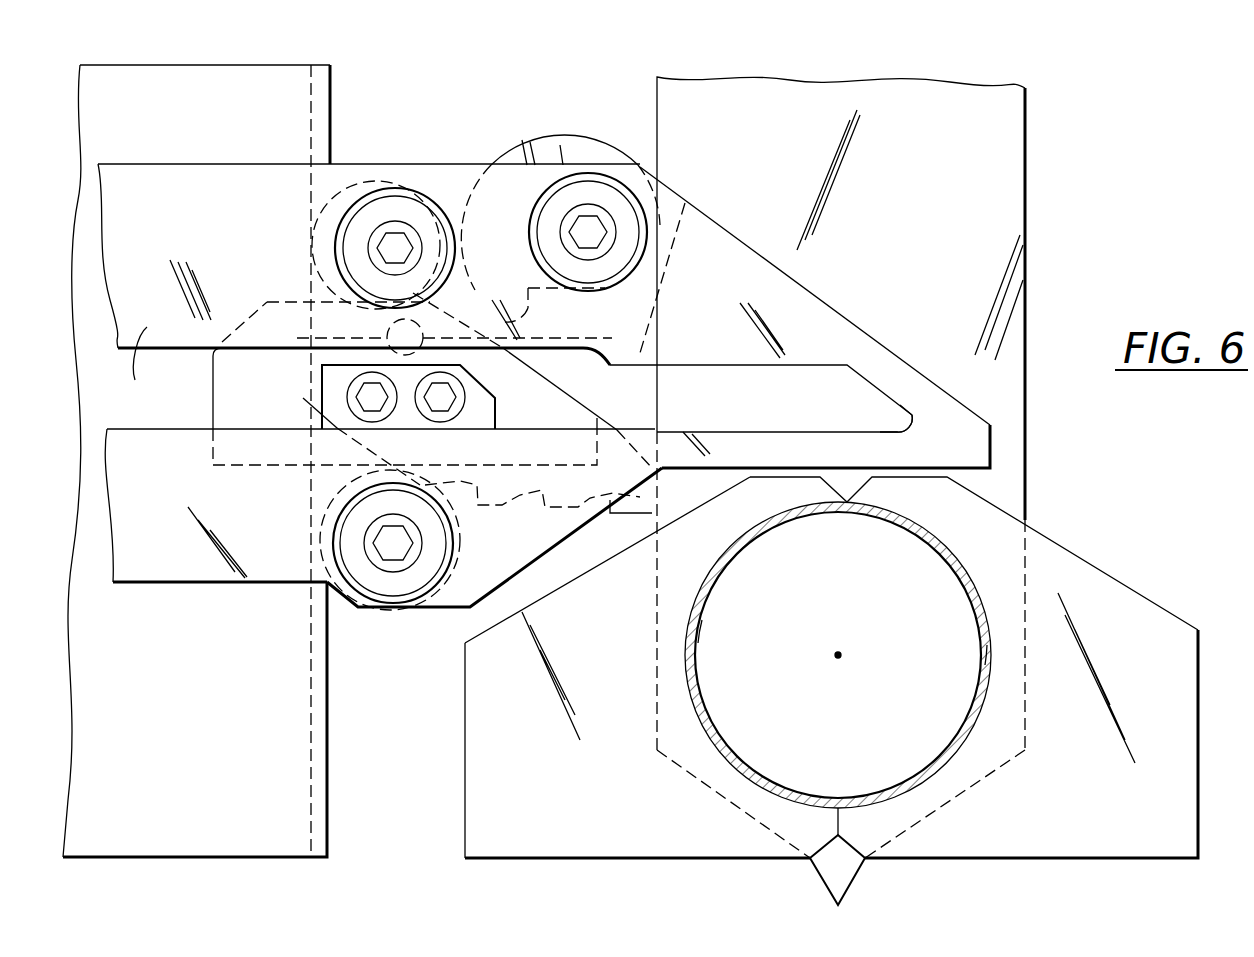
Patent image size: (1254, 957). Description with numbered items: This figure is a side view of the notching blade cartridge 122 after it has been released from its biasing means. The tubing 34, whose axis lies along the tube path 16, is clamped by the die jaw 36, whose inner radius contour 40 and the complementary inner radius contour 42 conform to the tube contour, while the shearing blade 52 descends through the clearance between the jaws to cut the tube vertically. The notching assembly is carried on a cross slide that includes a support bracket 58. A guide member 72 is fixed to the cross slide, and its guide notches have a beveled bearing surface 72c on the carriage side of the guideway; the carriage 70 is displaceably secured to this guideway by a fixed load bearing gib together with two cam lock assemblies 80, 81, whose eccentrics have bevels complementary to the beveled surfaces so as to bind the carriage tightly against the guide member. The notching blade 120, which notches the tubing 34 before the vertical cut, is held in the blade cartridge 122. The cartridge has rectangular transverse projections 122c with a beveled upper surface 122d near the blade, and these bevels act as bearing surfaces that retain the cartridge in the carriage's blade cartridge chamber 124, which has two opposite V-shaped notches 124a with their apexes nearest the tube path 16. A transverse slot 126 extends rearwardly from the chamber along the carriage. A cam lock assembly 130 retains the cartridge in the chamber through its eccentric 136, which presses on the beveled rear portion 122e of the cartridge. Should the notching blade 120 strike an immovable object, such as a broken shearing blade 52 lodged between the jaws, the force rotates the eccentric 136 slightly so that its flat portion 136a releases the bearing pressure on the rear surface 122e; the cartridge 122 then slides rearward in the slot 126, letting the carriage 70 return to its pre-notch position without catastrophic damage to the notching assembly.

The tube path 16 is at (838, 655).
The tubing 34 is at (798, 517).
The die jaw 36 is at (512, 685).
The inner radius contour 40 is at (698, 643).
The inner radius contour 42 is at (987, 645).
The shearing blade 52 is at (1003, 185).
The support bracket 58 is at (1075, 577).
The carriage 70 is at (188, 187).
The guide member 72 is at (223, 65).
The beveled bearing surface 72c is at (332, 117).
The cam lock assembly 80 is at (452, 210).
The cam lock assembly 81 is at (333, 537).
The notching blade 120 is at (640, 502).
The notching blade cartridge 122 is at (255, 370).
The transverse projection 122c is at (333, 396).
The beveled upper surface 122d is at (487, 388).
The beveled rear portion 122e is at (237, 333).
The blade cartridge chamber 124 is at (740, 397).
The V-shaped notch 124a is at (912, 410).
The transverse slot 126 is at (153, 339).
The cam lock assembly 130 is at (620, 210).
The eccentric 136 is at (542, 137).
The flat portion 136a is at (489, 315).